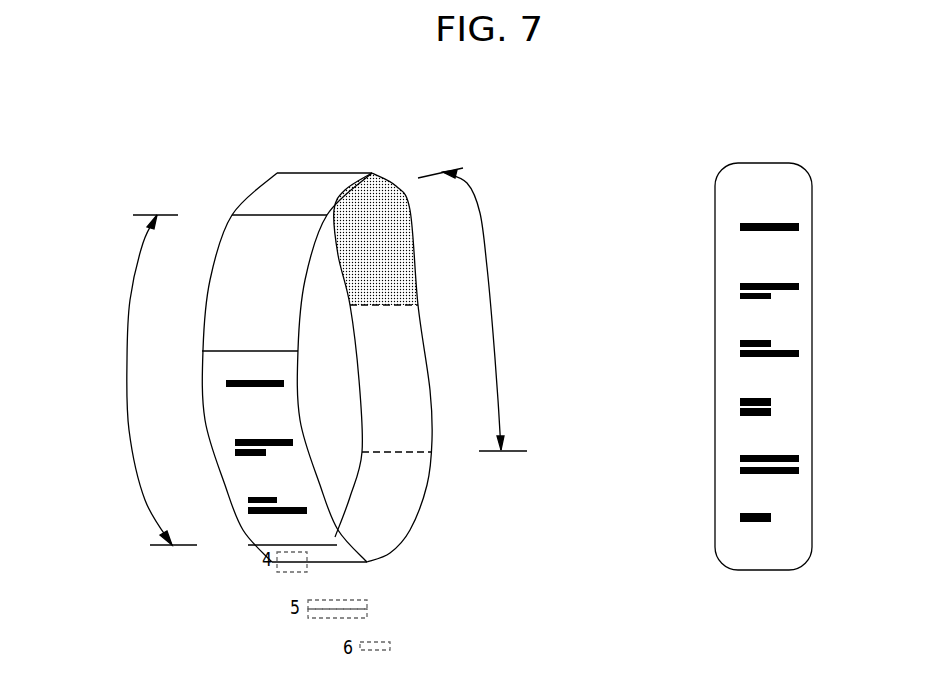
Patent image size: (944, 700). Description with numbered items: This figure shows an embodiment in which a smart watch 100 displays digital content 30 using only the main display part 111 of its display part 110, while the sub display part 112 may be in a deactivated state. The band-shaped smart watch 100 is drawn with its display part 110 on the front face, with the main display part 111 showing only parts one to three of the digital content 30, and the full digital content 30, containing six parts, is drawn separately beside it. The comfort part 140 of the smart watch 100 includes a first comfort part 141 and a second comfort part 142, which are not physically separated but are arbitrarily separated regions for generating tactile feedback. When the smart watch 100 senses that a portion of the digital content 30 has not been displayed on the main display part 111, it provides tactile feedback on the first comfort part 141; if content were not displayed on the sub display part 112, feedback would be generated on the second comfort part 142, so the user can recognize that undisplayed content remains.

The smart watch 100 is at (247, 190).
The display part 110 is at (127, 366).
The main display part 111 is at (258, 515).
The sub display part 112 is at (233, 255).
The comfort part 140 is at (493, 324).
The first comfort part 141 is at (385, 202).
The second comfort part 142 is at (422, 423).
The digital content 30 is at (765, 163).